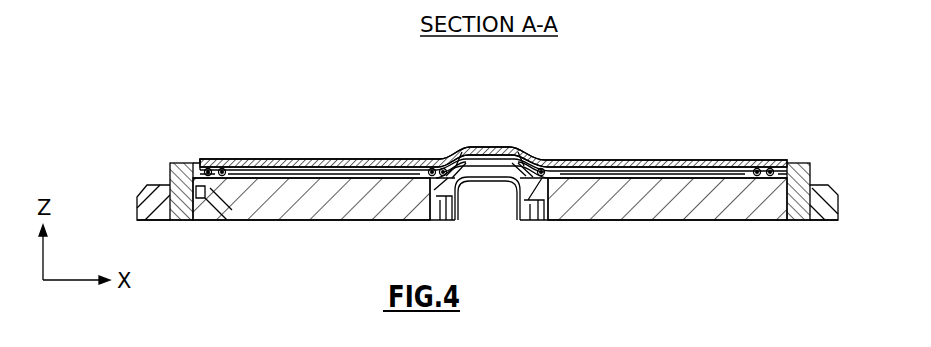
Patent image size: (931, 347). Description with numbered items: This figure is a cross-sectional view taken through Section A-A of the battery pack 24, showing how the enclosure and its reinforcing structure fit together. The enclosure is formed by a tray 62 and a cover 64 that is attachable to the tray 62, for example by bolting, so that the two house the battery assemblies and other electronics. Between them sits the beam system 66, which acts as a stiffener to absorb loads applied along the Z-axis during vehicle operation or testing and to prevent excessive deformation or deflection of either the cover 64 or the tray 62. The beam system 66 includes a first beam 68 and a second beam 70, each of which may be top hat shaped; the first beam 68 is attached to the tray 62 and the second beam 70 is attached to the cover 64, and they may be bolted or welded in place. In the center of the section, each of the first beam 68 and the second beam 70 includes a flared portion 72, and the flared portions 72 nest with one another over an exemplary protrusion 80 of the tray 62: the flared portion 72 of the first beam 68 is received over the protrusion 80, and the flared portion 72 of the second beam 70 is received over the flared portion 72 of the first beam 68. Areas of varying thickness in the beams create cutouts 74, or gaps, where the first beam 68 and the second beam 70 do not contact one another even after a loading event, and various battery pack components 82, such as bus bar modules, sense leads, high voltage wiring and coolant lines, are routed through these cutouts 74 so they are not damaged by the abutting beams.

The battery pack 24 is at (479, 122).
The tray 62 is at (196, 220).
The cover 64 is at (182, 163).
The beam system 66 is at (337, 157).
The first beam 68 is at (376, 207).
The second beam 70 is at (383, 160).
The flared portion 72 is at (491, 146).
The cutouts 74 is at (229, 168).
The protrusion 80 is at (481, 212).
The battery pack components 82 is at (546, 170).